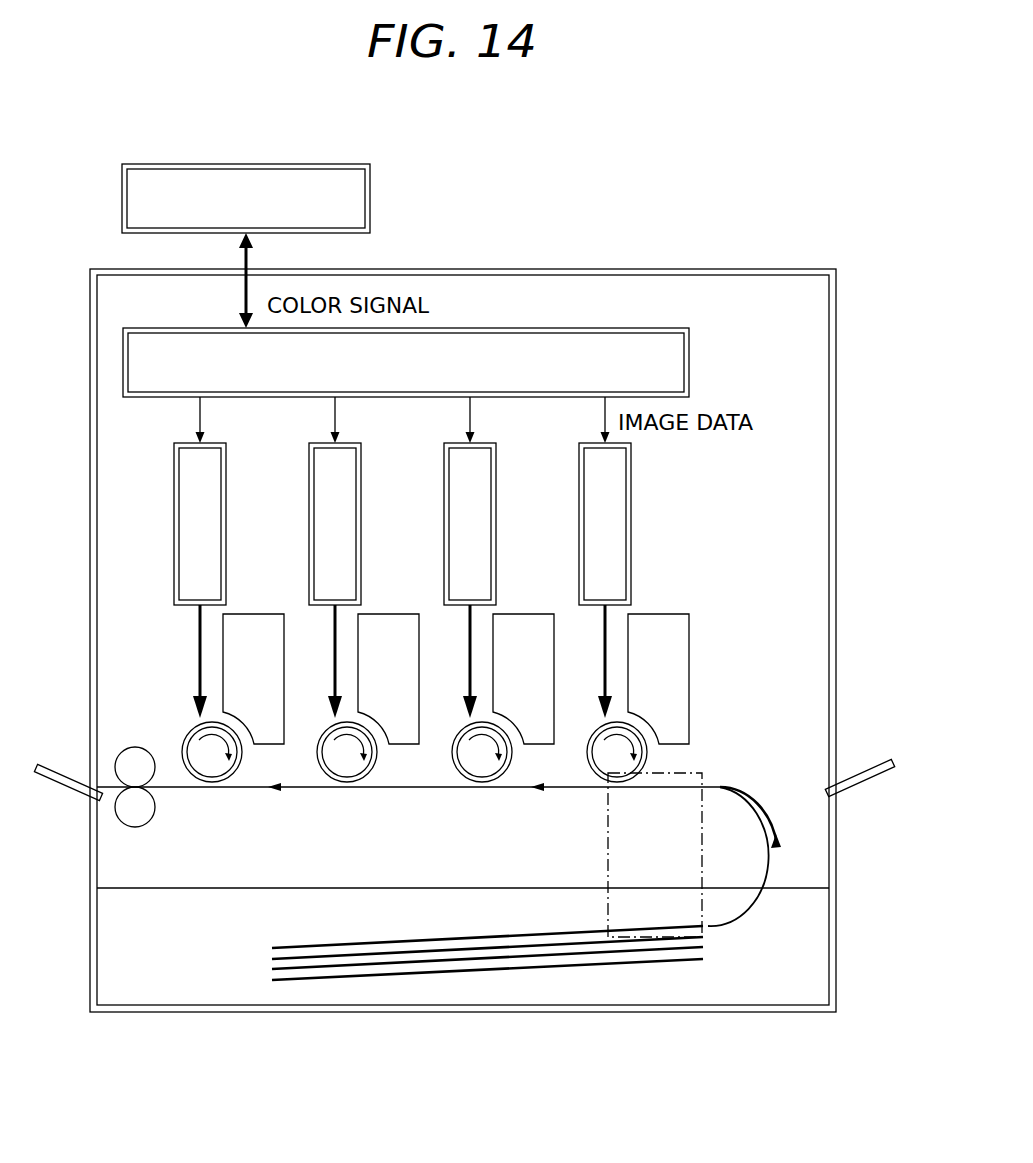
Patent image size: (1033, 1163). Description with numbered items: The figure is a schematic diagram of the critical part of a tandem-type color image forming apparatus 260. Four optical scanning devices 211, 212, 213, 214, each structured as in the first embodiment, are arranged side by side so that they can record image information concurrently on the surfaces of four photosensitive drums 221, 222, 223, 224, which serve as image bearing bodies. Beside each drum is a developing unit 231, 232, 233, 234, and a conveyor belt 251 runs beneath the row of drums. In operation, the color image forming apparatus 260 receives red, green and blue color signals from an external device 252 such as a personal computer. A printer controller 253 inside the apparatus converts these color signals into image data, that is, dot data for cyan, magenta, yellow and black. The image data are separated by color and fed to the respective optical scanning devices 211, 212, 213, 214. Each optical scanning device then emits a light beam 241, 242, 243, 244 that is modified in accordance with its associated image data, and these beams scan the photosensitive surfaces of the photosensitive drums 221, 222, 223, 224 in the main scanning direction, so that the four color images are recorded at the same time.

The optical scanning device 211 is at (197, 498).
The optical scanning device 212 is at (332, 498).
The optical scanning device 213 is at (468, 498).
The optical scanning device 214 is at (603, 498).
The photosensitive drum 221 is at (212, 767).
The photosensitive drum 222 is at (347, 767).
The photosensitive drum 223 is at (482, 767).
The photosensitive drum 224 is at (617, 767).
The developing unit 231 is at (262, 622).
The developing unit 232 is at (398, 622).
The developing unit 233 is at (533, 622).
The developing unit 234 is at (668, 622).
The light beam 241 is at (200, 670).
The light beam 242 is at (335, 670).
The light beam 243 is at (470, 670).
The light beam 244 is at (605, 670).
The conveyor belt 251 is at (767, 796).
The external device 252 is at (370, 177).
The printer controller 253 is at (689, 350).
The color image forming apparatus 260 is at (704, 255).